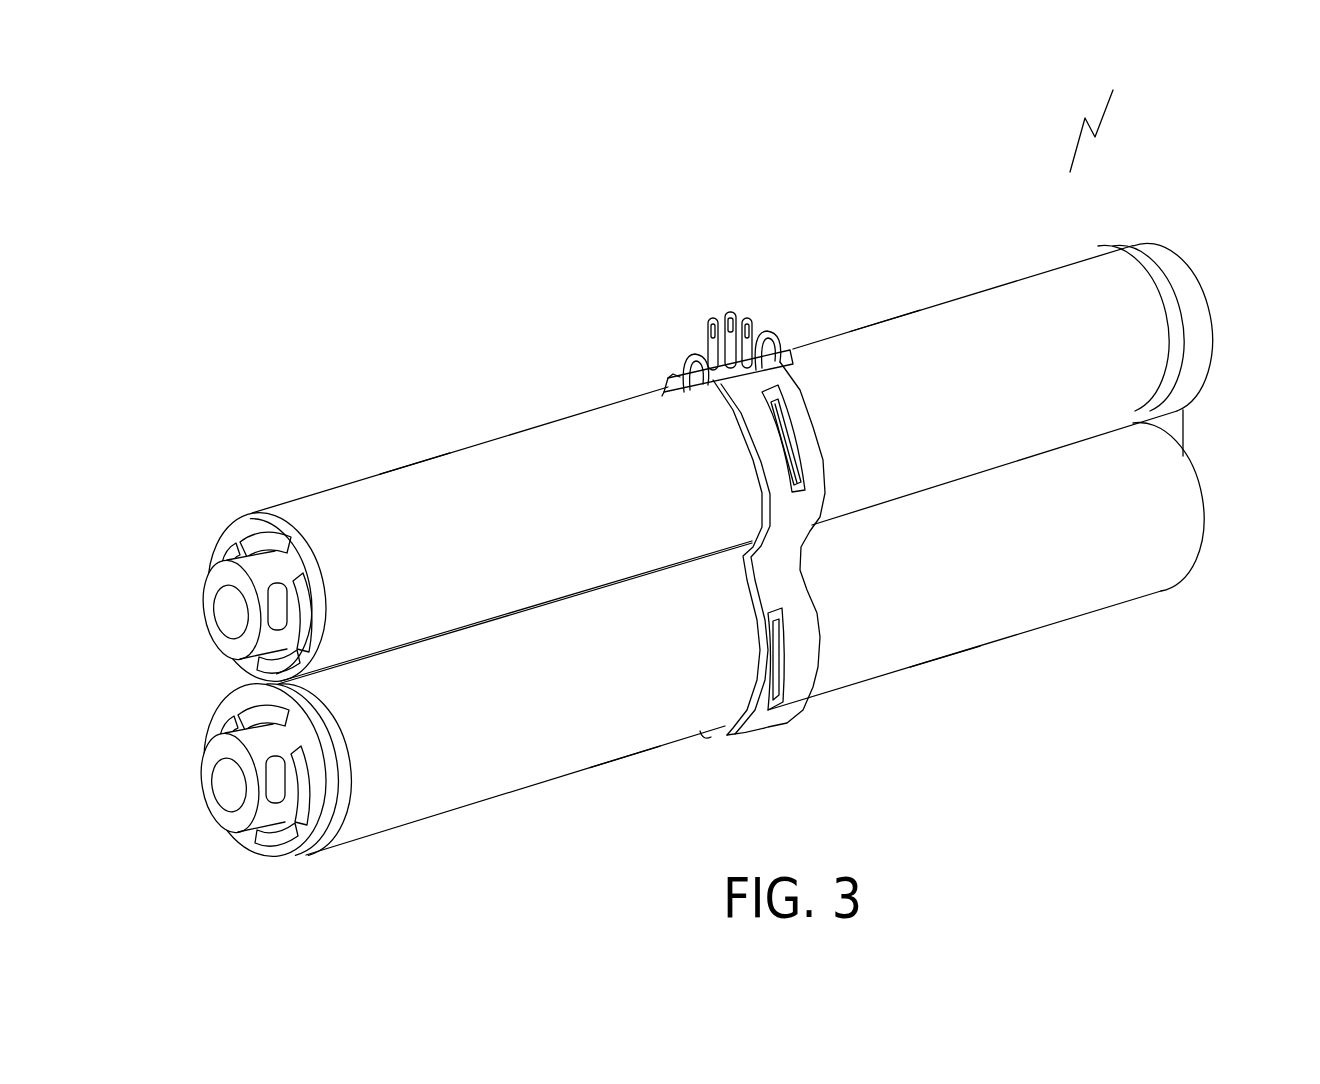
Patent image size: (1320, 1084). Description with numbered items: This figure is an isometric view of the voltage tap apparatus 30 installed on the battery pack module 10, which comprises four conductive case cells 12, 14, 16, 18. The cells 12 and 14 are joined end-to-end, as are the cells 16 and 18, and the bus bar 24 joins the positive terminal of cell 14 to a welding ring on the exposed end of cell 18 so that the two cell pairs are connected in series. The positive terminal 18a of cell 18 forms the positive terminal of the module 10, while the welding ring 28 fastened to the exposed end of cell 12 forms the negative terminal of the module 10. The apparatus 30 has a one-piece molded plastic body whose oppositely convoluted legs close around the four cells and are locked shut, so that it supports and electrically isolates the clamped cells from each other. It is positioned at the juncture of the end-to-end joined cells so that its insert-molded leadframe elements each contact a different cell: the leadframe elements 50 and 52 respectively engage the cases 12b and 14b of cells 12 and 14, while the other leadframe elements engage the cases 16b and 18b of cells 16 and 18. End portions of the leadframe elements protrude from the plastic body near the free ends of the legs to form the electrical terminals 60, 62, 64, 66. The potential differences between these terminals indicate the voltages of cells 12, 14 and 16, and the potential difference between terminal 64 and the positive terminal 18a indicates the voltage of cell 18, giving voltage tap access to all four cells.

The battery pack module 10 is at (1099, 116).
The conductive case cell 12 is at (306, 495).
The case of cell 12 12b is at (420, 477).
The conductive case cell 14 is at (953, 295).
The case of cell 14 14b is at (885, 333).
The conductive case cell 16 is at (1063, 627).
The case of cell 16 16b is at (943, 647).
The conductive case cell 18 is at (487, 804).
The positive terminal of cell 18 18a is at (210, 802).
The case of cell 18 18b is at (622, 743).
The bus bar 24 is at (1184, 430).
The welding ring 28 is at (222, 613).
The voltage tap apparatus 30 is at (635, 372).
The leadframe element 50 is at (795, 433).
The leadframe element 52 is at (789, 646).
The electrical terminal 60 is at (758, 326).
The electrical terminal 62 is at (708, 322).
The electrical terminal 64 is at (708, 345).
The electrical terminal 66 is at (734, 313).